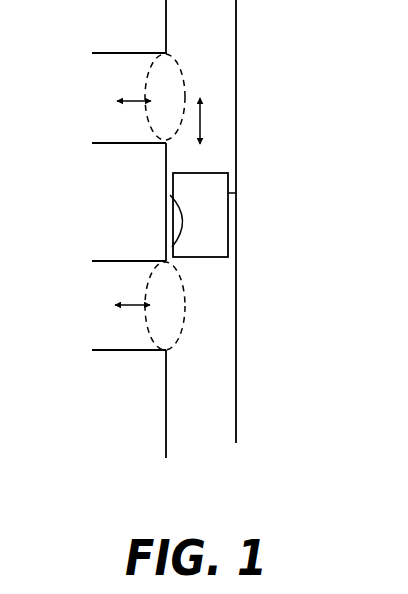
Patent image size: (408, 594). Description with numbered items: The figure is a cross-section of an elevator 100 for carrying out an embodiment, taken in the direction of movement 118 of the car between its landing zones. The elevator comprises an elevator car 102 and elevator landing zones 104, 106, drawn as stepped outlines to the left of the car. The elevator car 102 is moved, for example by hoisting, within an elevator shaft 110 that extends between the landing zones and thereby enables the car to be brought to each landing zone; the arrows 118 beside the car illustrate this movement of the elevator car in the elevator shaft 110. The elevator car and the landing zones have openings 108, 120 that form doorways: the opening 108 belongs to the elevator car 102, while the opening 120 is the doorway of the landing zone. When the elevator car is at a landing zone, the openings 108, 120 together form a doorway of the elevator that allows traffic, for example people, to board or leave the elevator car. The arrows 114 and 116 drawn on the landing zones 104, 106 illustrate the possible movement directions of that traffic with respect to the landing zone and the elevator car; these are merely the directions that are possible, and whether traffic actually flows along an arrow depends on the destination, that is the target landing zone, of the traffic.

The elevator 100 is at (342, 488).
The elevator car 102 is at (236, 191).
The landing zone 104 is at (110, 71).
The landing zone 106 is at (110, 305).
The opening 108 is at (182, 236).
The elevator shaft 110 is at (194, 407).
The arrow 114 is at (134, 100).
The arrow 116 is at (133, 306).
The arrows illustrating movement of the elevator car 118 is at (201, 124).
The opening 120 is at (158, 145).